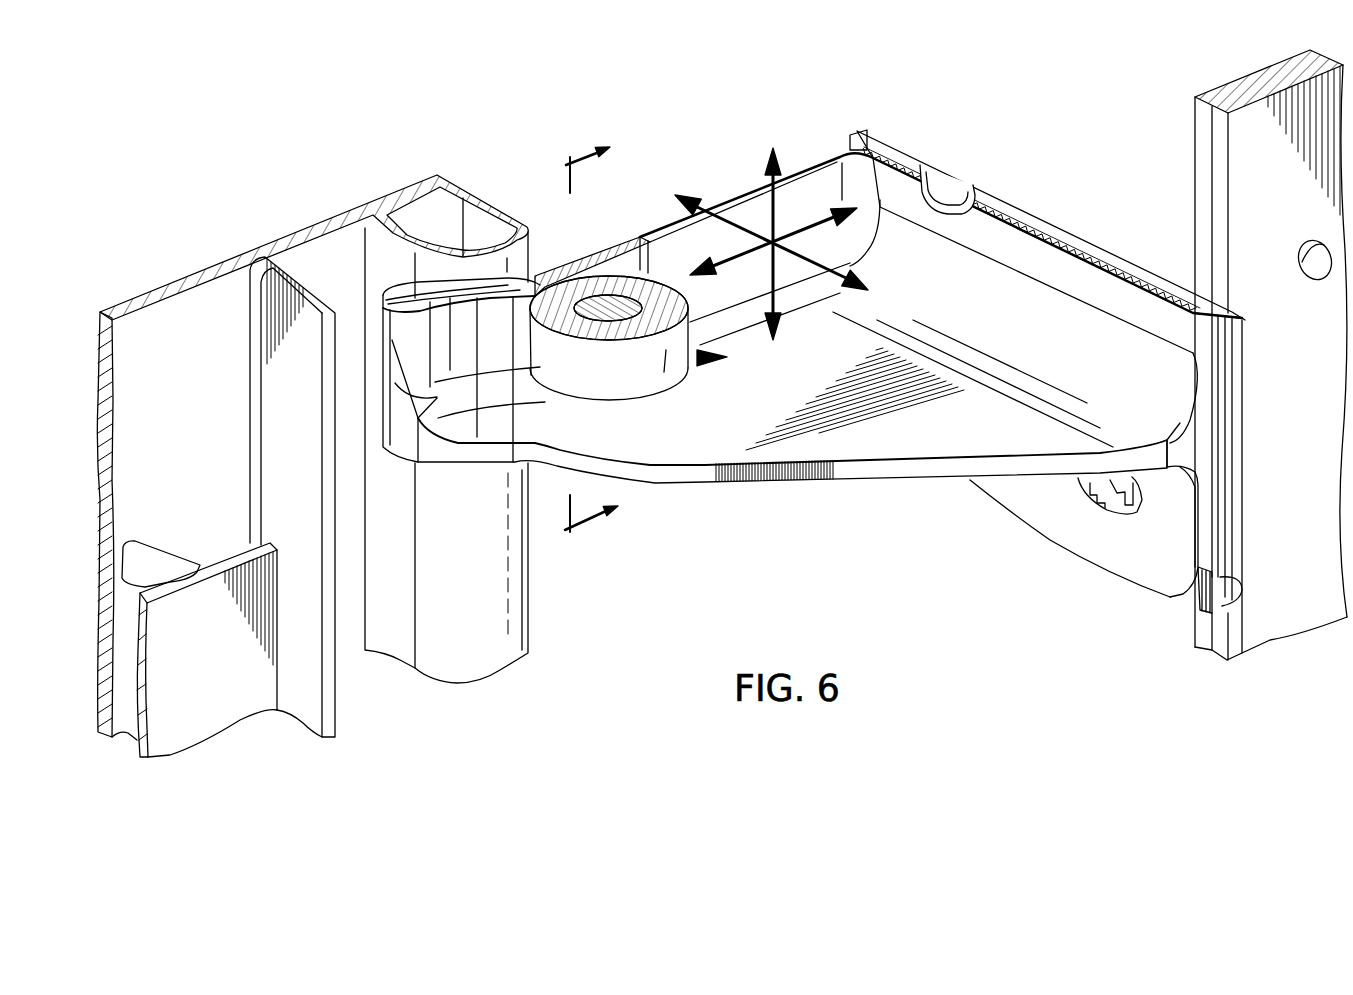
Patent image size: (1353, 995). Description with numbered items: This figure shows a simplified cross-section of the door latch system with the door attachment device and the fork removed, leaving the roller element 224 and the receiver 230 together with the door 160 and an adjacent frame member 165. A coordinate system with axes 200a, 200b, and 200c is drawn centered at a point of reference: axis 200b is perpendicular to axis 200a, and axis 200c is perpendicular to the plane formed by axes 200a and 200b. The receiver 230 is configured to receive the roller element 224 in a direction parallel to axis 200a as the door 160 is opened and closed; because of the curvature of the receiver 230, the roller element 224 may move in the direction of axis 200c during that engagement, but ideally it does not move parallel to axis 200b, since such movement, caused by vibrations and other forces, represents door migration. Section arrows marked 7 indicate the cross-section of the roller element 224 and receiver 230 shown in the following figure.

The door 160 is at (332, 698).
The second frame member (tube) 165 is at (530, 610).
The roller element 224 is at (648, 387).
The receiver 230 is at (895, 470).
The axis 200a is at (802, 205).
The axis 200b is at (772, 212).
The axis 200c is at (840, 262).
The section line for FIG. 7 is at (599, 329).